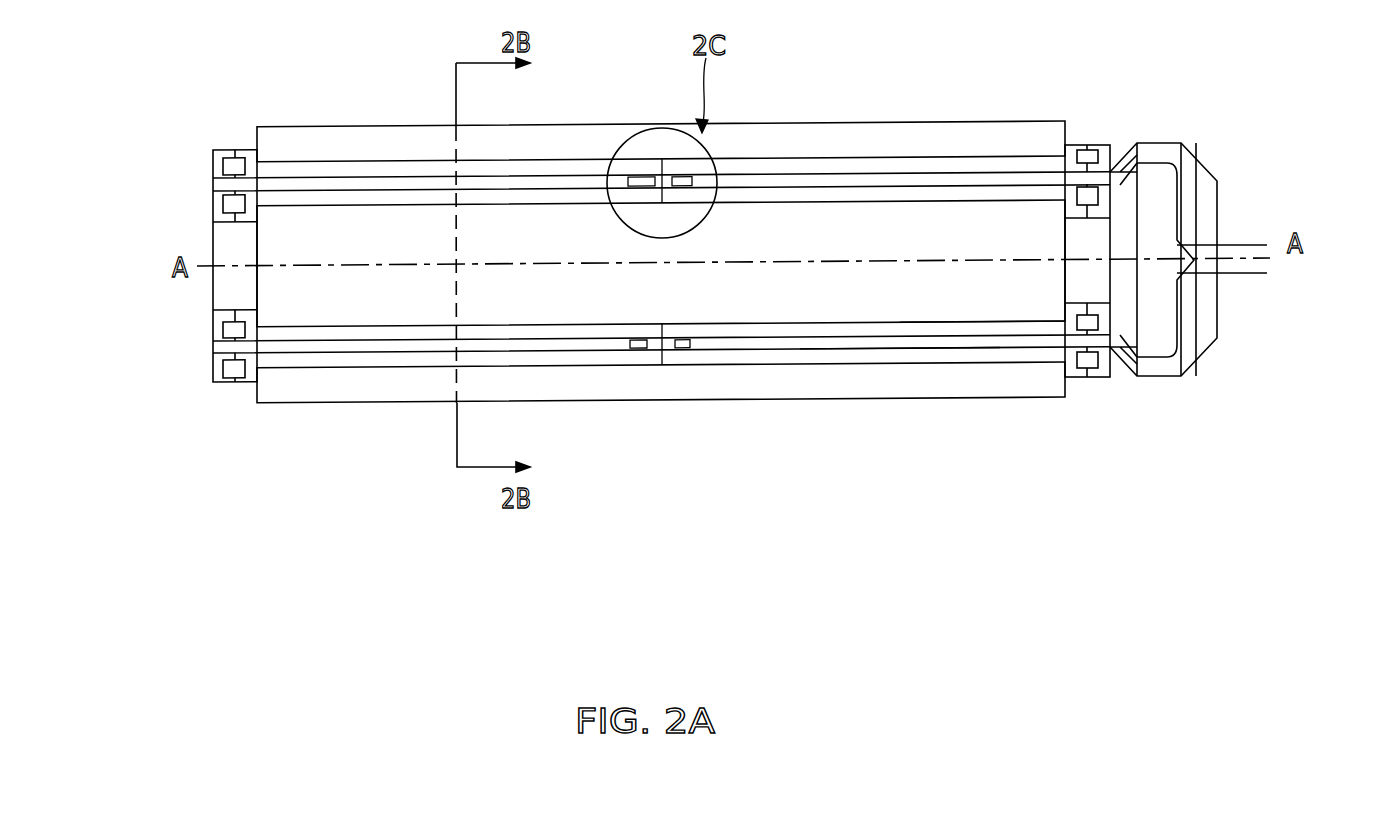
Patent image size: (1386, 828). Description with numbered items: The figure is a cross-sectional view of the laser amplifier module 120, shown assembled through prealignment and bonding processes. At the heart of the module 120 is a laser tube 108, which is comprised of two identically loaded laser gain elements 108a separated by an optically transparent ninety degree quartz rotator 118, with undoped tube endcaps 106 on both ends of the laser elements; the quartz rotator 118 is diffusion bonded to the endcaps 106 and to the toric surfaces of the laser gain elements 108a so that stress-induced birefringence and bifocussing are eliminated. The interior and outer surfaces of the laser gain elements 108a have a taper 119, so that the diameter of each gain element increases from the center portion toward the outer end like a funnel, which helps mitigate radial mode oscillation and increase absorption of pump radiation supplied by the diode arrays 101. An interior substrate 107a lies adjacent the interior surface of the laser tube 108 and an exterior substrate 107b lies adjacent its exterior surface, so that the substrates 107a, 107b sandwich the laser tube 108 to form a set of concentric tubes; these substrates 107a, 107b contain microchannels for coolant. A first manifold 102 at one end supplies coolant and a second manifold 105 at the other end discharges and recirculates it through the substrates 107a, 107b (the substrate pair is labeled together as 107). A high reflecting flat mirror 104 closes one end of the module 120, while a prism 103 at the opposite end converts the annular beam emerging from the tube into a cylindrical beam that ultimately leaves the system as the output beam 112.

The diode arrays 101 is at (606, 127).
The first manifold 102 is at (217, 193).
The prism 103 is at (1222, 178).
The high reflecting flat mirror 104 is at (213, 350).
The second manifold 105 is at (1110, 163).
The undoped tube endcaps 106 is at (640, 182).
The lower plate assembly 107 is at (1037, 357).
The interior substrate 107a is at (975, 330).
The exterior substrate 107b is at (887, 355).
The laser tube 108 is at (368, 352).
The laser gain elements 108a is at (397, 185).
The output beam 112 is at (1262, 264).
The quartz rotator 118 is at (655, 348).
The taper 119 is at (972, 182).
The laser amplifier module 120 is at (583, 516).